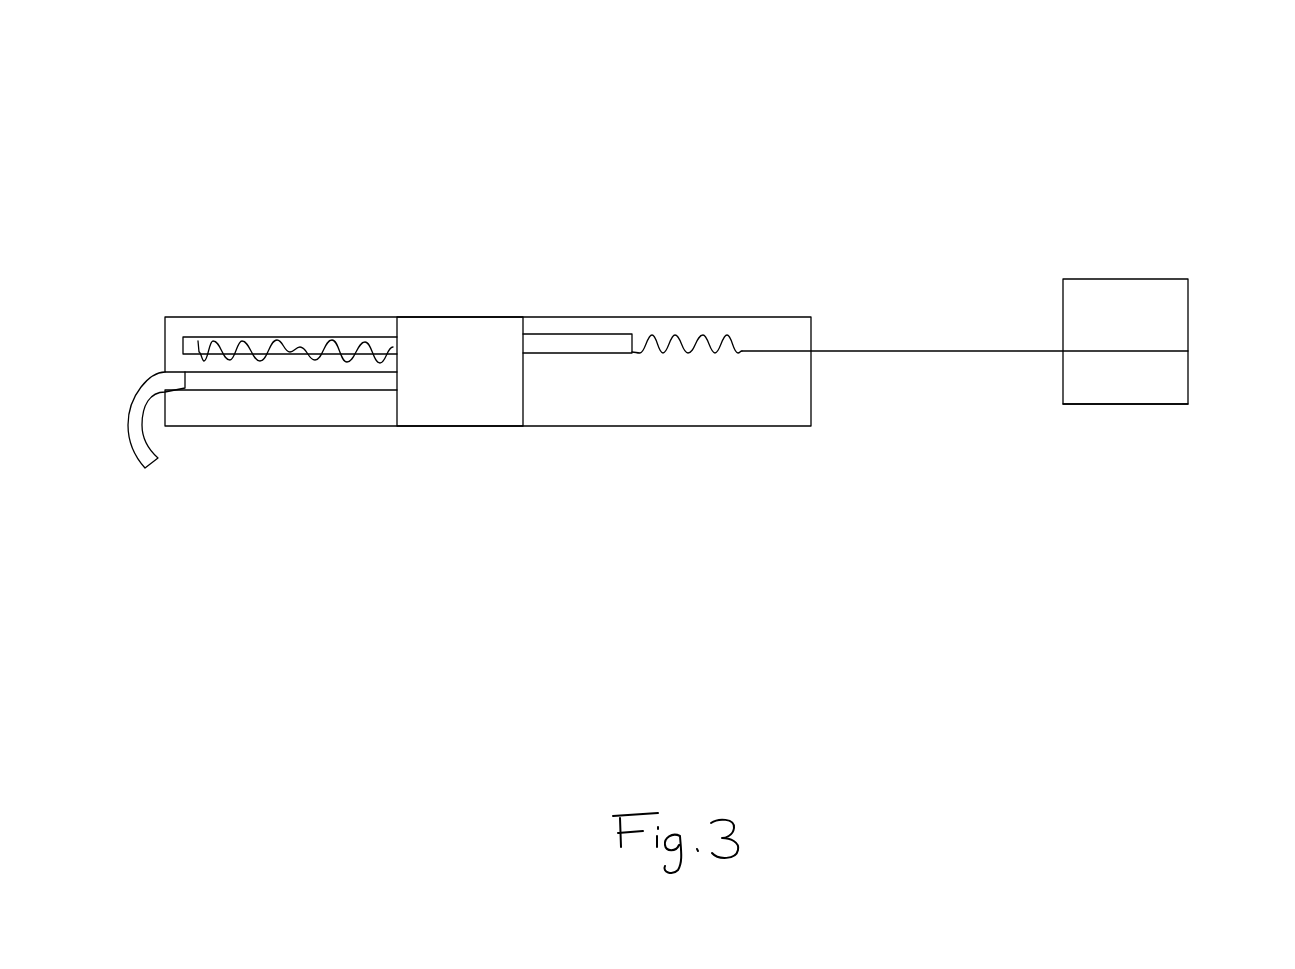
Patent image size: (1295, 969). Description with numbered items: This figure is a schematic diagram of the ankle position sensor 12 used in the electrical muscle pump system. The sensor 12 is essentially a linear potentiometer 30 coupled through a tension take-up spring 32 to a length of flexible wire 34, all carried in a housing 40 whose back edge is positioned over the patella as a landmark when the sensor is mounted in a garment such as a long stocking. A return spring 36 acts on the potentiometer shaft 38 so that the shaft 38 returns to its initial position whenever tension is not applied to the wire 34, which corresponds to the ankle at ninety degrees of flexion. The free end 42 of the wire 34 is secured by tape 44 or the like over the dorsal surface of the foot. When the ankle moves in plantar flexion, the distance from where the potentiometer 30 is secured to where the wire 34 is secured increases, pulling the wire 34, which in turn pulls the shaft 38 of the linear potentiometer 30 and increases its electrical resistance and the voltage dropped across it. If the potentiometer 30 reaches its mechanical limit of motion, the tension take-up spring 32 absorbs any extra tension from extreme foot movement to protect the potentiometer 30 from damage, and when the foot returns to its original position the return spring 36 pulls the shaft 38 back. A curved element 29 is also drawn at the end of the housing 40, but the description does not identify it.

The position sensor 12 is at (698, 348).
The curved tube 29 is at (191, 445).
The linear potentiometer 30 is at (460, 435).
The tension take-up spring 32 is at (687, 277).
The flexible wire 34 is at (965, 456).
The return spring 36 is at (290, 288).
The potentiometer shaft 38 is at (577, 477).
The housing 40 is at (488, 495).
The free end 42 is at (1166, 341).
The tape 44 is at (1125, 505).